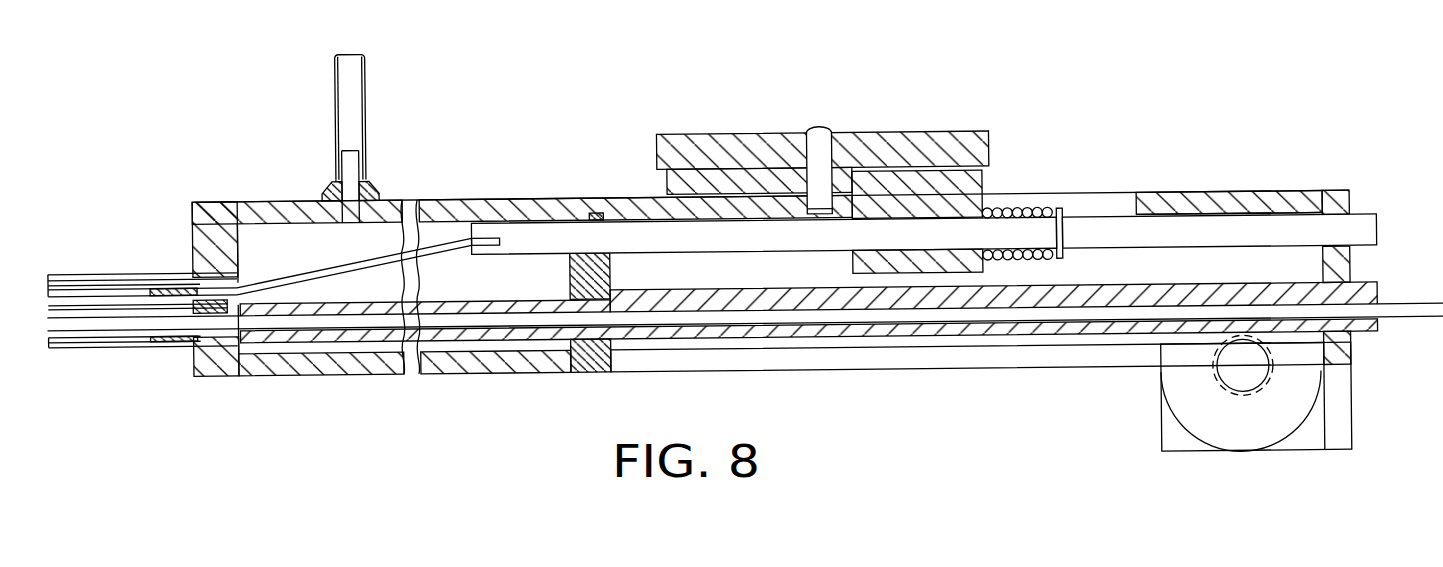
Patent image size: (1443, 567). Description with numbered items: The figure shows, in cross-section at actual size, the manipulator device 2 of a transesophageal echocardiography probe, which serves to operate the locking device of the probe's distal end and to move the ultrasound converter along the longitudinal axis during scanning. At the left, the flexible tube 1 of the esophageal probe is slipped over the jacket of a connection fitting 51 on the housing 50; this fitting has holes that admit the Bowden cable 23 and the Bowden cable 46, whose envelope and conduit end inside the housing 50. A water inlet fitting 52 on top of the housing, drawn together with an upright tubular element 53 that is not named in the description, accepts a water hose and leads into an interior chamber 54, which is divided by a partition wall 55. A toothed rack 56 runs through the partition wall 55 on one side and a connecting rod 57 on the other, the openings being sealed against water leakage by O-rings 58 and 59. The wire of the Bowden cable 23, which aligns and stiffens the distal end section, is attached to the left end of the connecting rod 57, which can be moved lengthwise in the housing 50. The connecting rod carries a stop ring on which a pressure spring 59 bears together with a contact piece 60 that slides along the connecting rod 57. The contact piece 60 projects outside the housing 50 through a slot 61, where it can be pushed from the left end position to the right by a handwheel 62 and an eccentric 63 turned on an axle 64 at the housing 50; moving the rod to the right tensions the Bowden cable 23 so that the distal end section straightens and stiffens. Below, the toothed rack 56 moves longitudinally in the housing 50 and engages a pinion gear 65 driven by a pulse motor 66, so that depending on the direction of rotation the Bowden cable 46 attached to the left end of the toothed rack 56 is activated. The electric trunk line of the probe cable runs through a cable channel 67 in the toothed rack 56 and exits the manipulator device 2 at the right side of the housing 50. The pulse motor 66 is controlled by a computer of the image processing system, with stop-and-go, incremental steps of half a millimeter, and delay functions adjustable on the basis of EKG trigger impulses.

The flexible tube 1 is at (88, 267).
The manipulator device 2 is at (636, 98).
The Bowden cable 23 is at (113, 270).
The Bowden cable 46 is at (120, 332).
The housing 50 is at (447, 369).
The connection fitting 51 is at (172, 264).
The water inlet fitting 52 is at (373, 181).
The fluid port tube 53 is at (360, 72).
The interior chamber 54 is at (306, 252).
The partition wall 55 is at (572, 279).
The toothed rack 56 is at (893, 352).
The connecting rod 57 is at (683, 255).
The O-ring 58 is at (1067, 226).
The pressure spring 59 is at (1030, 210).
The contact piece 60 is at (990, 188).
The slot 61 is at (1020, 206).
The handwheel 62 is at (928, 142).
The eccentric 63 is at (714, 175).
The axle 64 is at (830, 151).
The pinion gear 65 is at (1231, 378).
The pulse motor 66 is at (1285, 421).
The cable channel 67 is at (1062, 328).